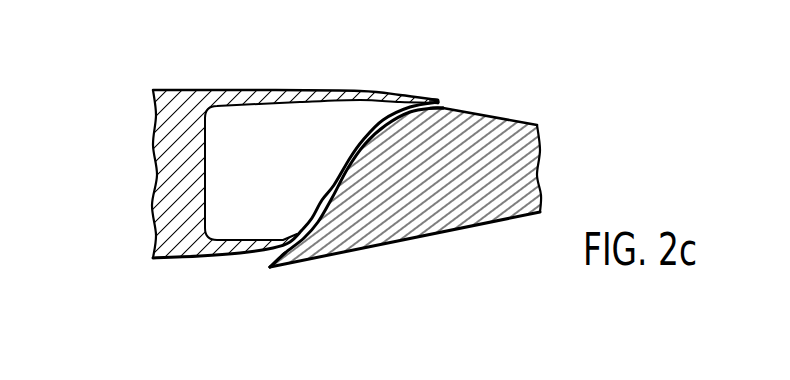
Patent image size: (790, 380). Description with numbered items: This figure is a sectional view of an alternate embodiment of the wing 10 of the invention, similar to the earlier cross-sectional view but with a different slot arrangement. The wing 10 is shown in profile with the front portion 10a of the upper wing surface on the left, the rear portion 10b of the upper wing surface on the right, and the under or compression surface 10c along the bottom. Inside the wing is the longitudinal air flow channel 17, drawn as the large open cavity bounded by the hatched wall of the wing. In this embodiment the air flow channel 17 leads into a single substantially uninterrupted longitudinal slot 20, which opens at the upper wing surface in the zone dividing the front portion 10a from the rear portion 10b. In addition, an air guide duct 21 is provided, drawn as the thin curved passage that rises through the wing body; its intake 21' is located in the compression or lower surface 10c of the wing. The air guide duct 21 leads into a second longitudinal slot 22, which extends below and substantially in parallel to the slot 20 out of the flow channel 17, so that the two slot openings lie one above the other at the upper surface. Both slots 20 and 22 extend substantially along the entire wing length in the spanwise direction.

The wing 10 is at (114, 162).
The front portion of the upper wing surface 10a is at (216, 90).
The rear portion of the upper wing surface 10b is at (513, 122).
The compression surface 10c is at (204, 257).
The longitudinal air flow channel 17 is at (250, 108).
The longitudinal slot 20 is at (440, 102).
The air guide duct 21 is at (298, 190).
The intake of the air guide duct 21' is at (271, 275).
The longitudinal slot 22 is at (443, 108).